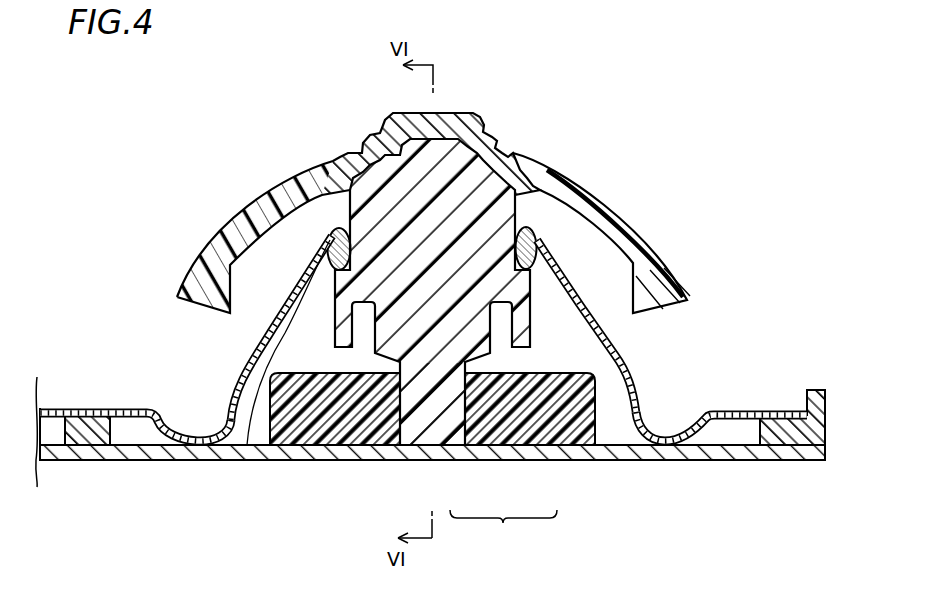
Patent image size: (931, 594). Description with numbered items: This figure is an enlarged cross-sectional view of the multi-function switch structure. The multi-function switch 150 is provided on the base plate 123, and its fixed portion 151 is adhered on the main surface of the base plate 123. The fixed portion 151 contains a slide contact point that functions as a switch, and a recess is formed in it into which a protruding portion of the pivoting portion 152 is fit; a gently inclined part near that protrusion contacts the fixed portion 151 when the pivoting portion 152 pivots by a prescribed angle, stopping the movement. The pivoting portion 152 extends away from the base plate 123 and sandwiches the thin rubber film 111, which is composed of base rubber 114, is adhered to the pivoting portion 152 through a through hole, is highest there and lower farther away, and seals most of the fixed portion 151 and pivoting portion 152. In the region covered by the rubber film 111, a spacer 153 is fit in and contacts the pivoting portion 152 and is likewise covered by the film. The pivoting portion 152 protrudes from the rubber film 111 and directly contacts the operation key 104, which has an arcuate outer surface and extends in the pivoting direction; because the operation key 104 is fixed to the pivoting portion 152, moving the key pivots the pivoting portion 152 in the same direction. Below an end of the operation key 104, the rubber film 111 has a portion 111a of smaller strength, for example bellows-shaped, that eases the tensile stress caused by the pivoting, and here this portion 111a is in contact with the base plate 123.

The operation key 104 is at (445, 122).
The rubber film 111 is at (280, 315).
The portion easing tension 111a is at (192, 438).
The base rubber 114 is at (55, 408).
The base plate 123 is at (718, 460).
The multi-function switch 150 is at (503, 531).
The fixed portion 151 is at (535, 407).
The pivoting portion 152 is at (445, 412).
The spacer 153 is at (247, 445).